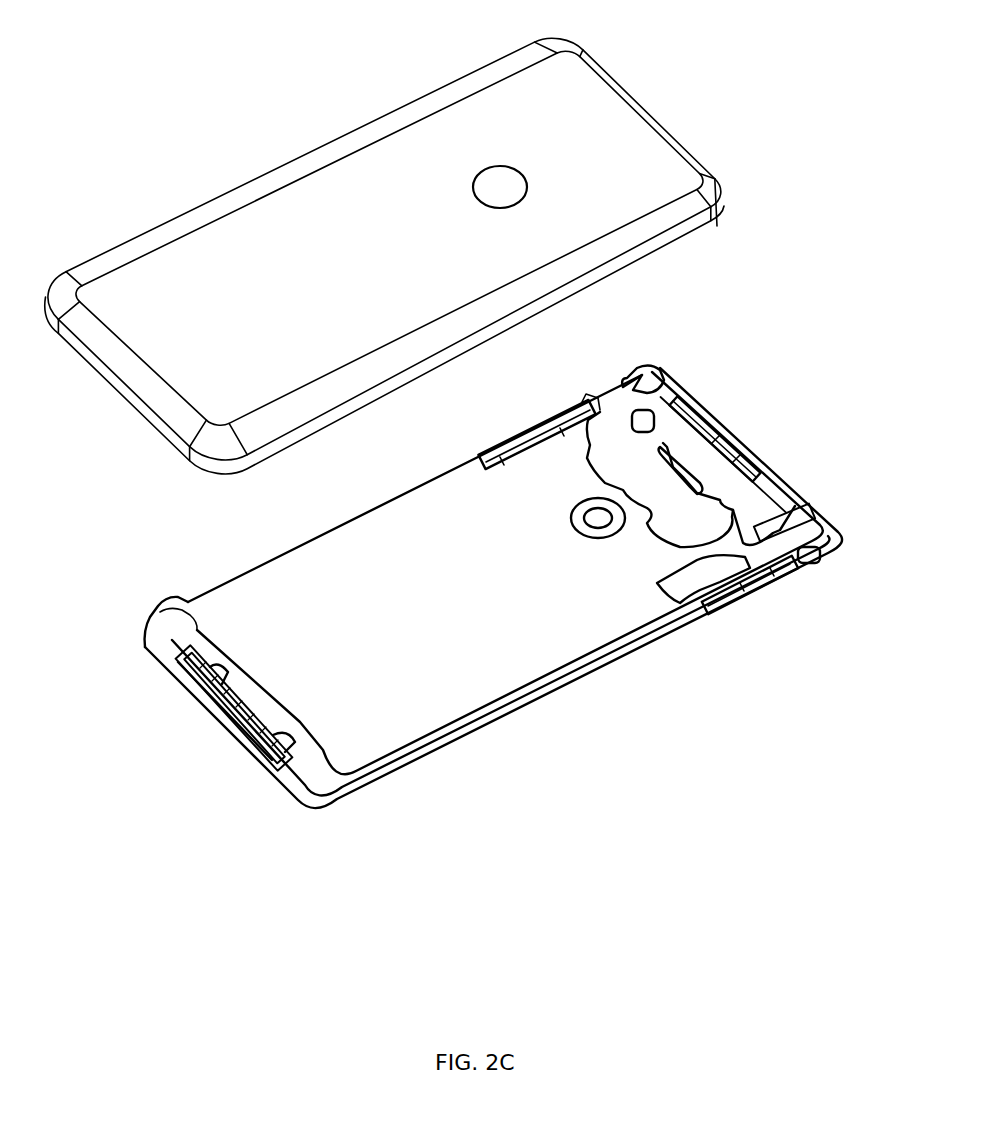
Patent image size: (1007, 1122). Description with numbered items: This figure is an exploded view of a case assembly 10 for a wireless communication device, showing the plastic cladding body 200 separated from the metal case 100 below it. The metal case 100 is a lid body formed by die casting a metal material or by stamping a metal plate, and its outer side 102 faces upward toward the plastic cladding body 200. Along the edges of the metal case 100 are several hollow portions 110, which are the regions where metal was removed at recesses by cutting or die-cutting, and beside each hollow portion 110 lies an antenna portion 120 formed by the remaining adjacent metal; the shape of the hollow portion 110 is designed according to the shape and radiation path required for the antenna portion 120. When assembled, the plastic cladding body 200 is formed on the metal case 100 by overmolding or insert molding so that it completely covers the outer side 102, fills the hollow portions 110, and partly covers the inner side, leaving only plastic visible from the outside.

The case assembly 10 is at (507, 423).
The metal case 100 is at (478, 584).
The outer side 102 is at (372, 545).
The hollow portion 110 is at (530, 432).
The antenna portion 120 is at (495, 613).
The plastic cladding body 200 is at (615, 106).